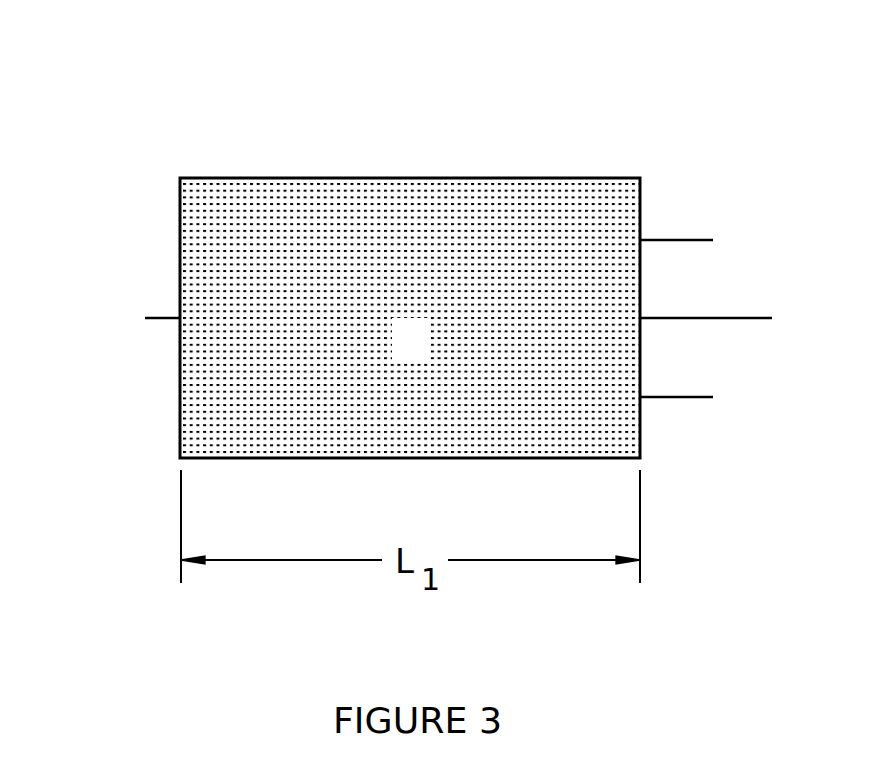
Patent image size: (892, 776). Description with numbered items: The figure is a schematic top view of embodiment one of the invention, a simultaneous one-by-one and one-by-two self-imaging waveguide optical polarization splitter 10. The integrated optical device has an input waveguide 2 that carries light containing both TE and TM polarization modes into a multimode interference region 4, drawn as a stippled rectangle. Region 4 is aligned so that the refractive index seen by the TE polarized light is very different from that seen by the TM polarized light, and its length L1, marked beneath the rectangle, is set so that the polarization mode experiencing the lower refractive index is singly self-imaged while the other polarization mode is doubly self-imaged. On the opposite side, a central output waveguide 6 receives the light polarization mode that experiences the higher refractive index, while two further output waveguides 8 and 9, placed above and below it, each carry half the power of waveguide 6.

The self-imaging waveguide optical polarization splitter 10 is at (430, 133).
The multimode interference region 4 is at (422, 351).
The input waveguide 2 is at (157, 317).
The output waveguide 9 is at (685, 240).
The output waveguide 6 is at (733, 318).
The output waveguide 8 is at (685, 400).